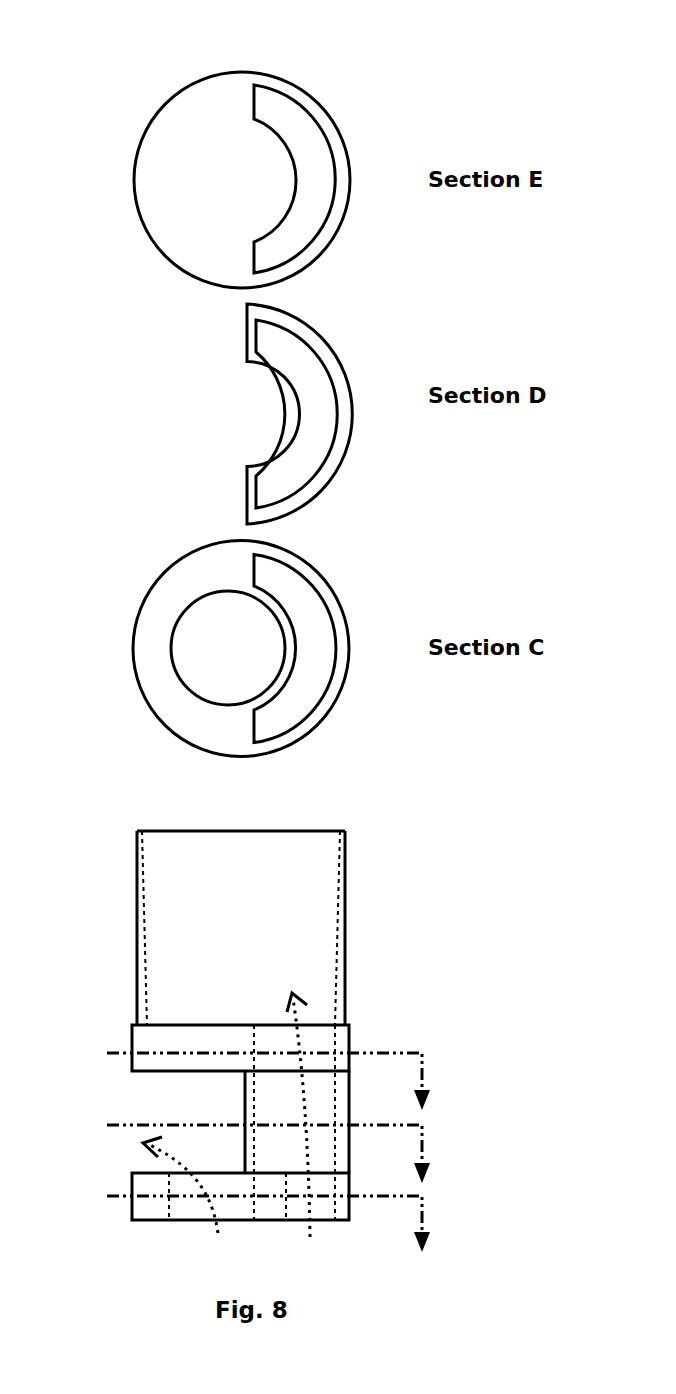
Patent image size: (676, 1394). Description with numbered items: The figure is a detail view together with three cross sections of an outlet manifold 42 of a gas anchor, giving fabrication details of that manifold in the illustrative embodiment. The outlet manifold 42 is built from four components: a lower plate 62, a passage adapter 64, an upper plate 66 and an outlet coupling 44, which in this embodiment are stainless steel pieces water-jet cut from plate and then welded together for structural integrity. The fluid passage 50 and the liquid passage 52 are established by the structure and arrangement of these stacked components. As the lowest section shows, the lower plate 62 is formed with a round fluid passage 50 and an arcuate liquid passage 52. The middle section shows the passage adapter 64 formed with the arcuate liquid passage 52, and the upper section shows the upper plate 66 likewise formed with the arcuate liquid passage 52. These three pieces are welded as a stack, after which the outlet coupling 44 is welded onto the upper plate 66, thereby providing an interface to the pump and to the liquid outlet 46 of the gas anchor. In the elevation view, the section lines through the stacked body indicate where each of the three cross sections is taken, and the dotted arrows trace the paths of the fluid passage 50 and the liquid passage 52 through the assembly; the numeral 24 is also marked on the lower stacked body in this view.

The valve body 24 is at (138, 1109).
The outlet manifold 42 is at (572, 1145).
The outlet coupling 44 is at (345, 937).
The liquid outlet 46 is at (192, 830).
The fluid passage 50 is at (207, 408).
The liquid passage 52 is at (307, 209).
The lower plate 62 is at (336, 600).
The passage adapter 64 is at (336, 352).
The upper plate 66 is at (331, 112).